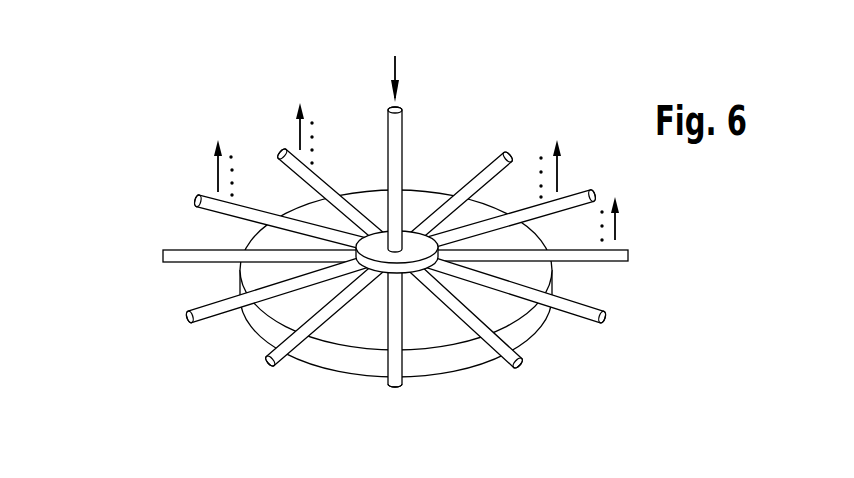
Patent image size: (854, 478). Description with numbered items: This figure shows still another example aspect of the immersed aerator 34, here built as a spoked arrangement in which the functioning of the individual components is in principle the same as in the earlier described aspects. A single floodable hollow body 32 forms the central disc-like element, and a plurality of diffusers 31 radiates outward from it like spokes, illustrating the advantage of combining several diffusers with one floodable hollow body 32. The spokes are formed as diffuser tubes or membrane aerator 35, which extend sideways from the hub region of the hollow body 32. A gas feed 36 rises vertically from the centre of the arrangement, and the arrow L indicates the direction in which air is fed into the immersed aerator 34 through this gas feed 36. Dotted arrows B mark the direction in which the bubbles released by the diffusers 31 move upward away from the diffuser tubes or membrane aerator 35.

The diffuser 31 is at (220, 310).
The floodable hollow body 32 is at (527, 328).
The immersed aerator 34 is at (232, 110).
The diffuser tubes or membrane aerator 35 is at (197, 258).
The gas feed 36 is at (397, 153).
The arrow, air feed direction L is at (395, 63).
The arrow, bubble movement direction B is at (615, 225).